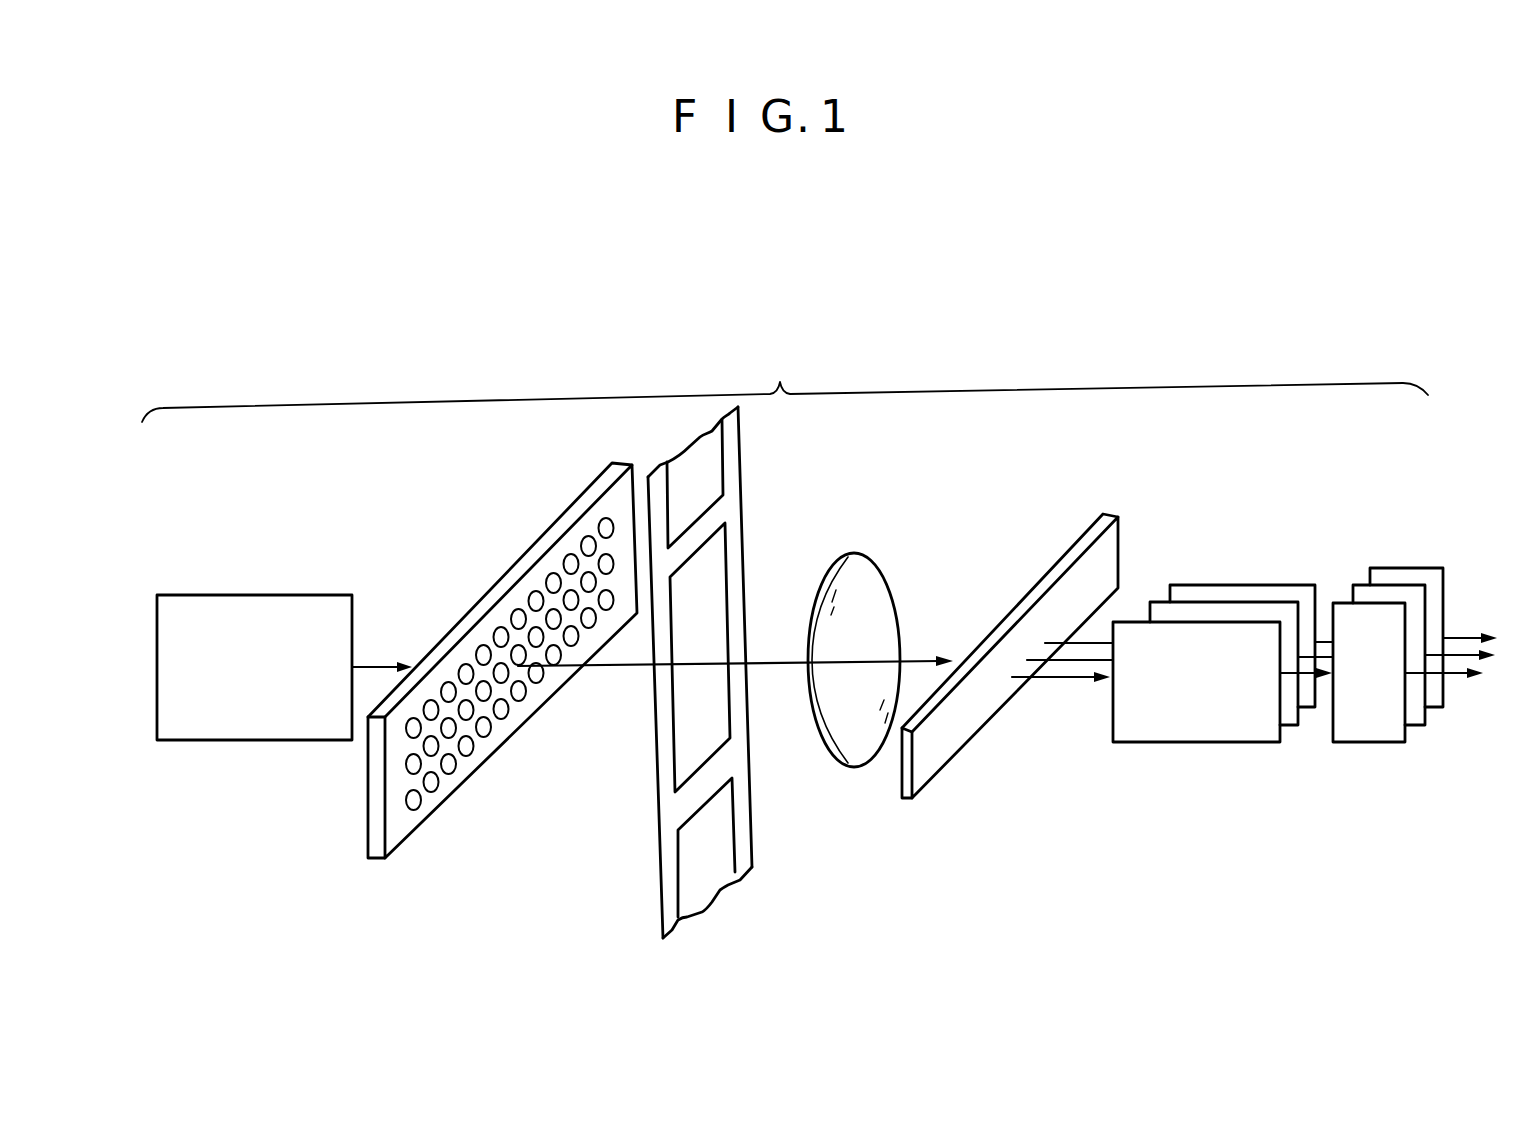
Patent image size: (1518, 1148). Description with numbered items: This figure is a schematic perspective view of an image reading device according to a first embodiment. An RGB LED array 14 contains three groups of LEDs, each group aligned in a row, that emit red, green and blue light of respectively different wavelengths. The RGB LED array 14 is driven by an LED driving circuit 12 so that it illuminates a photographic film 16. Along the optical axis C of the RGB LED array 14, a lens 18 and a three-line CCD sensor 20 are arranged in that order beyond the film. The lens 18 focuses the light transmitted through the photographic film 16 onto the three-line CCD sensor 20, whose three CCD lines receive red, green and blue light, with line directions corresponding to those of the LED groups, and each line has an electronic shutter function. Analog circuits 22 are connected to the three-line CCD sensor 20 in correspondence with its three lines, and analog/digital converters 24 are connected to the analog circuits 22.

The LED driving circuit 12 is at (293, 594).
The RGB LED array 14 is at (562, 508).
The photographic film 16 is at (743, 479).
The lens 18 is at (891, 599).
The three-line CCD sensor 20 is at (1072, 548).
The analog circuits 22 is at (1217, 585).
The analog/digital (A/D) converters 24 is at (1393, 568).
The optical axis C is at (767, 668).